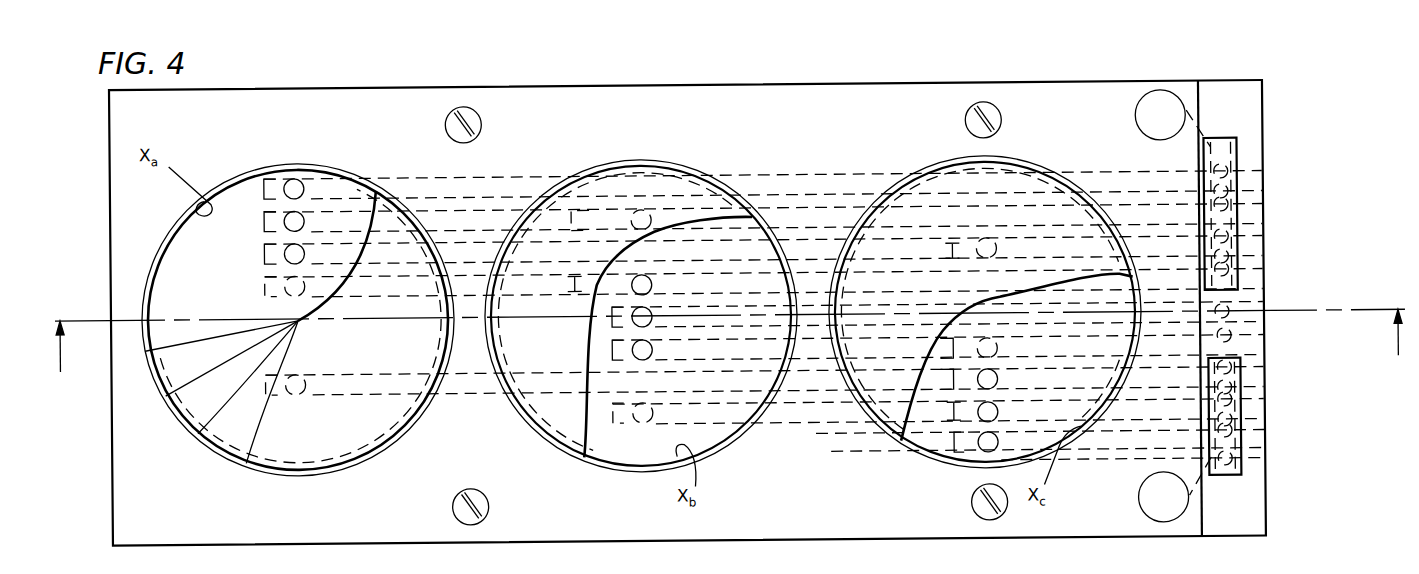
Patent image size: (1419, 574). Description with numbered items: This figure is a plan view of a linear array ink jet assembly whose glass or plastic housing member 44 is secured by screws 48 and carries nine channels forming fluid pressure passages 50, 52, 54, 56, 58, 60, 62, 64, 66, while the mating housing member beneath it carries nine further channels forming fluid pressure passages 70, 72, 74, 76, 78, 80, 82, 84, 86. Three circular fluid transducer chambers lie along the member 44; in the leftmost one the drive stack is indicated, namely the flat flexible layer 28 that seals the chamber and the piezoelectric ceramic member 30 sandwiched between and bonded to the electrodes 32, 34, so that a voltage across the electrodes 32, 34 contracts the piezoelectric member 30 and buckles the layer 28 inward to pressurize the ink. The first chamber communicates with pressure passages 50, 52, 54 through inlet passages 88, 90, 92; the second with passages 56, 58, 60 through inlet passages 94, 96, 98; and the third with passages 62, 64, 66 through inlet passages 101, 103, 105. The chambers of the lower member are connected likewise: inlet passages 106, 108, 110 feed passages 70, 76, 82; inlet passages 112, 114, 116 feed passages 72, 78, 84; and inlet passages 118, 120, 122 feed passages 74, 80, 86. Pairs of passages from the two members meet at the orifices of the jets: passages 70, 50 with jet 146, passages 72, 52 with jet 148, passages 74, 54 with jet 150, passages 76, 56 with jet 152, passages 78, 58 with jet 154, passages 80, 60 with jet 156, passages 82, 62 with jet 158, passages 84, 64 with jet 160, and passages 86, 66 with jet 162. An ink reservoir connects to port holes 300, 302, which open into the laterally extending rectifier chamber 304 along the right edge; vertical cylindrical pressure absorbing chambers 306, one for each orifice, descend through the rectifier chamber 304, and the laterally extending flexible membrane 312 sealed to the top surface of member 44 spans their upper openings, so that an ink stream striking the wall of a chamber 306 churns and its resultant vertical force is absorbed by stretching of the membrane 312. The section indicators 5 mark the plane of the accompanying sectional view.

The section line 5- 5 is at (730, 357).
The flat flexible layer 28 is at (166, 374).
The piezoelectric ceramic member 30 is at (220, 434).
The electrode 32 is at (188, 409).
The electrode 34 is at (283, 439).
The housing member 44 is at (745, 530).
The screws 48 is at (484, 120).
The fluid pressure passage 50 is at (505, 203).
The fluid pressure passage 52 is at (495, 236).
The fluid pressure passage 54 is at (497, 267).
The fluid pressure passage 56 is at (570, 288).
The fluid pressure passage 58 is at (768, 334).
The fluid pressure passage 60 is at (774, 366).
The fluid pressure passage 62 is at (935, 390).
The fluid pressure passage 64 is at (905, 458).
The fluid pressure passage 66 is at (1145, 460).
The fluid pressure passage 70 is at (763, 186).
The fluid pressure passage 72 is at (590, 221).
The fluid pressure passage 74 is at (948, 258).
The fluid pressure passage 76 is at (432, 301).
The fluid pressure passage 78 is at (937, 316).
The fluid pressure passage 80 is at (935, 360).
The fluid pressure passage 82 is at (742, 399).
The fluid pressure passage 84 is at (808, 437).
The fluid pressure passage 86 is at (1047, 469).
The inlet passage 88 is at (283, 197).
The inlet passage 90 is at (265, 226).
The inlet passage 92 is at (265, 258).
The inlet passage 94 is at (648, 280).
The inlet passage 96 is at (652, 312).
The inlet passage 98 is at (655, 356).
The inlet passage 101 is at (1003, 386).
The inlet passage 103 is at (1003, 420).
The inlet passage 105 is at (1003, 450).
The inlet passage 106 is at (310, 187).
The inlet passage 108 is at (265, 291).
The inlet passage 110 is at (312, 380).
The inlet passage 112 is at (648, 215).
The inlet passage 114 is at (608, 325).
The inlet passage 116 is at (632, 421).
The inlet passage 118 is at (1000, 247).
The inlet passage 120 is at (1003, 356).
The inlet passage 122 is at (925, 463).
The jet 146 is at (1265, 181).
The jet 148 is at (1265, 214).
The jet 150 is at (1265, 246).
The jet 152 is at (1265, 279).
The jet 154 is at (1265, 312).
The jet 156 is at (1265, 332).
The jet 158 is at (1265, 397).
The jet 160 is at (1265, 429).
The jet 162 is at (1265, 458).
The port hole 300 is at (1150, 108).
The port hole 302 is at (1162, 531).
The rectifier chamber 304 is at (1240, 153).
The pressure absorbing chamber 306 is at (1245, 198).
The flexible membrane 312 is at (1240, 487).